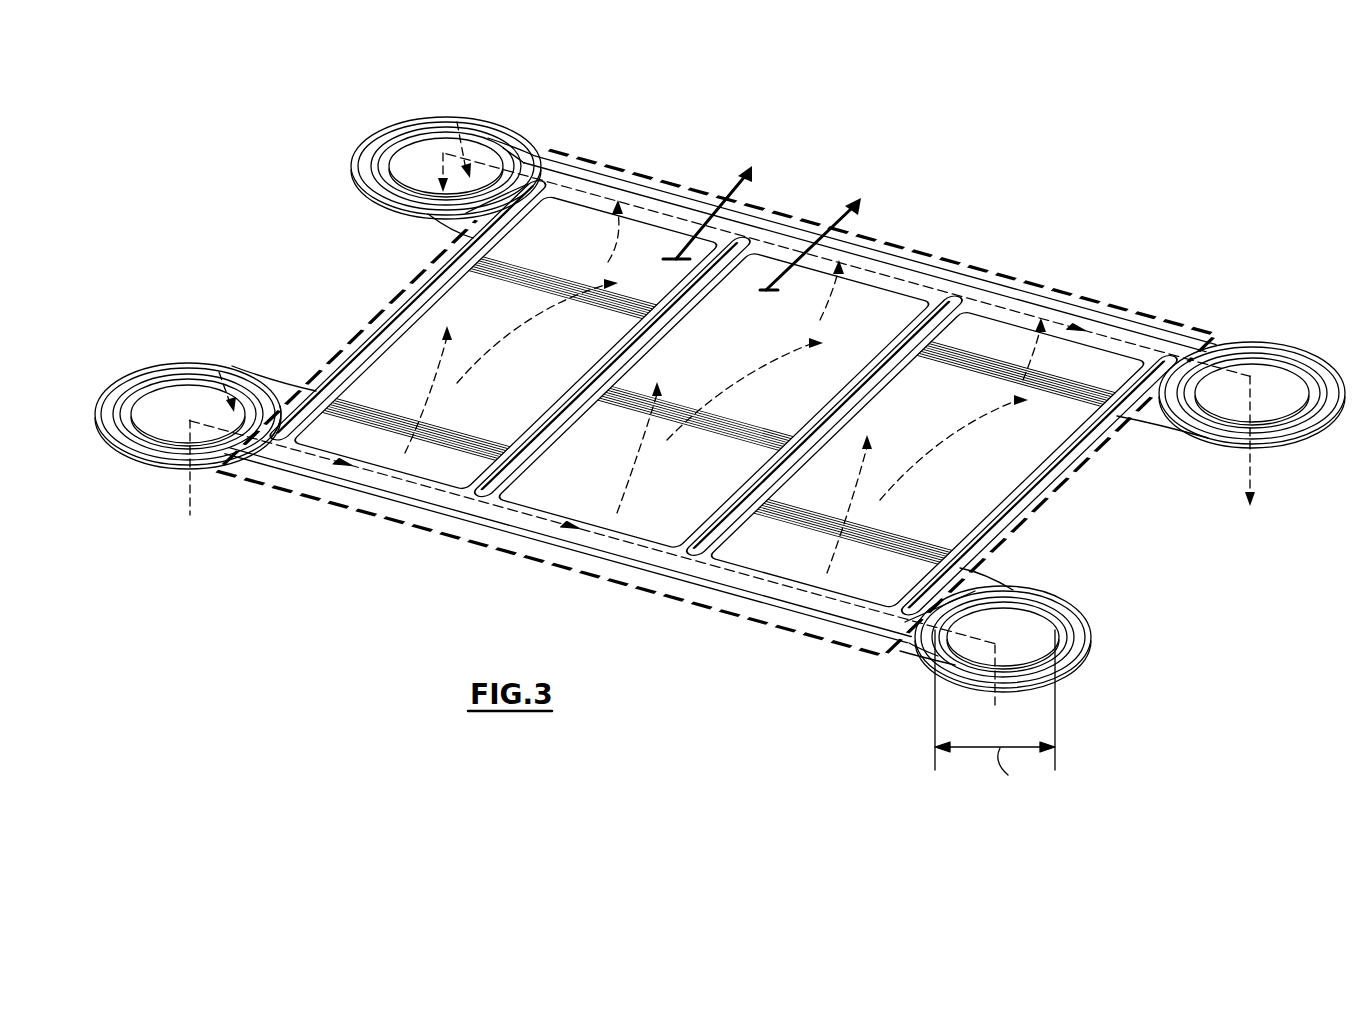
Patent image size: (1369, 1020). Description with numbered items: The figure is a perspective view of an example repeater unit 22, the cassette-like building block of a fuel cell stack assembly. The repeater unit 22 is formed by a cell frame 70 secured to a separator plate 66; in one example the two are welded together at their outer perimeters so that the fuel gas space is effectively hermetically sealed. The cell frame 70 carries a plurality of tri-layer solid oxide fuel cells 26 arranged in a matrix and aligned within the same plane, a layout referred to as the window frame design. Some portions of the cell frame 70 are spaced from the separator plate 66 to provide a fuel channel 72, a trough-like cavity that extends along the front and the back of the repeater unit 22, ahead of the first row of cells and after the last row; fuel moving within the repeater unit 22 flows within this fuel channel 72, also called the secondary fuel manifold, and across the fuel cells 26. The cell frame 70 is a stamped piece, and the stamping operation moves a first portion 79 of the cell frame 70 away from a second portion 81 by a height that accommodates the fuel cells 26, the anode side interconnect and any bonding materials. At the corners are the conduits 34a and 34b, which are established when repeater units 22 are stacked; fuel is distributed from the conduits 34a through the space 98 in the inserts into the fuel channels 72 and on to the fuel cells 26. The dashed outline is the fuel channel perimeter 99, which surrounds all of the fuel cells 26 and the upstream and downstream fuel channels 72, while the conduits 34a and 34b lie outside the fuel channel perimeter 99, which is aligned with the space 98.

The repeater unit 22 is at (706, 443).
The solid oxide fuel cell 26 is at (382, 367).
The conduit 34a is at (150, 420).
The conduit 34b is at (380, 172).
The separator plate 66 is at (783, 612).
The cell frame 70 is at (120, 383).
The fuel channel 72 is at (327, 453).
The first portion 79 is at (597, 187).
The second portion 81 is at (650, 193).
The space 98 is at (457, 122).
The fuel channel perimeter 99 is at (947, 250).